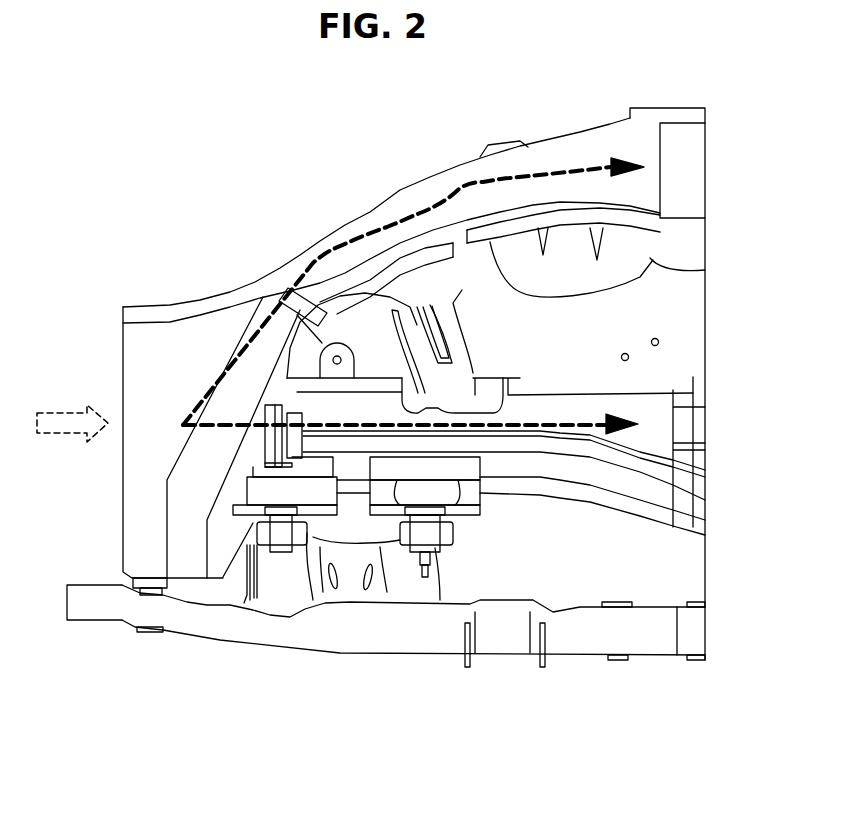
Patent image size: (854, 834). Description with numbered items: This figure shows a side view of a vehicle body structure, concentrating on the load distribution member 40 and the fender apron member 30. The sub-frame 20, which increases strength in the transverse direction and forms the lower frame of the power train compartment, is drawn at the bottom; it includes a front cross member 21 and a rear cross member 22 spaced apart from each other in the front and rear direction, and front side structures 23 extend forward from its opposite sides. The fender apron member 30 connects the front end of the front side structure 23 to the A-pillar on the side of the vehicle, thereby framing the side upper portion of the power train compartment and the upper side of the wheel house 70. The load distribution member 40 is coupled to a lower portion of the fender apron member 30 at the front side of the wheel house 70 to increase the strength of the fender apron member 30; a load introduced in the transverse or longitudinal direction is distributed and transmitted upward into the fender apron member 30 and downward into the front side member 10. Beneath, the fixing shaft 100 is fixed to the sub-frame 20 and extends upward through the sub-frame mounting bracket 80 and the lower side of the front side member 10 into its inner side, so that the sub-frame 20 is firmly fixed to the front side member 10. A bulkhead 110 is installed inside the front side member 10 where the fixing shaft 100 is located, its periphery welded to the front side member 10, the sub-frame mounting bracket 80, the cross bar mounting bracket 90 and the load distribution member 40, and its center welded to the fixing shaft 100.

The front side member 10 is at (645, 482).
The sub-frame 20 is at (347, 675).
The front cross member 21 is at (270, 590).
The rear cross member 22 is at (415, 587).
The front side structure 23 is at (87, 613).
The fender apron member 30 is at (423, 197).
The load distribution member 40 is at (153, 337).
The wheel house 70 is at (582, 309).
The sub-frame mounting bracket 80 is at (300, 497).
The cross bar mounting bracket 90 is at (298, 435).
The fixing shaft 100 is at (277, 530).
The bulkhead 110 is at (273, 435).